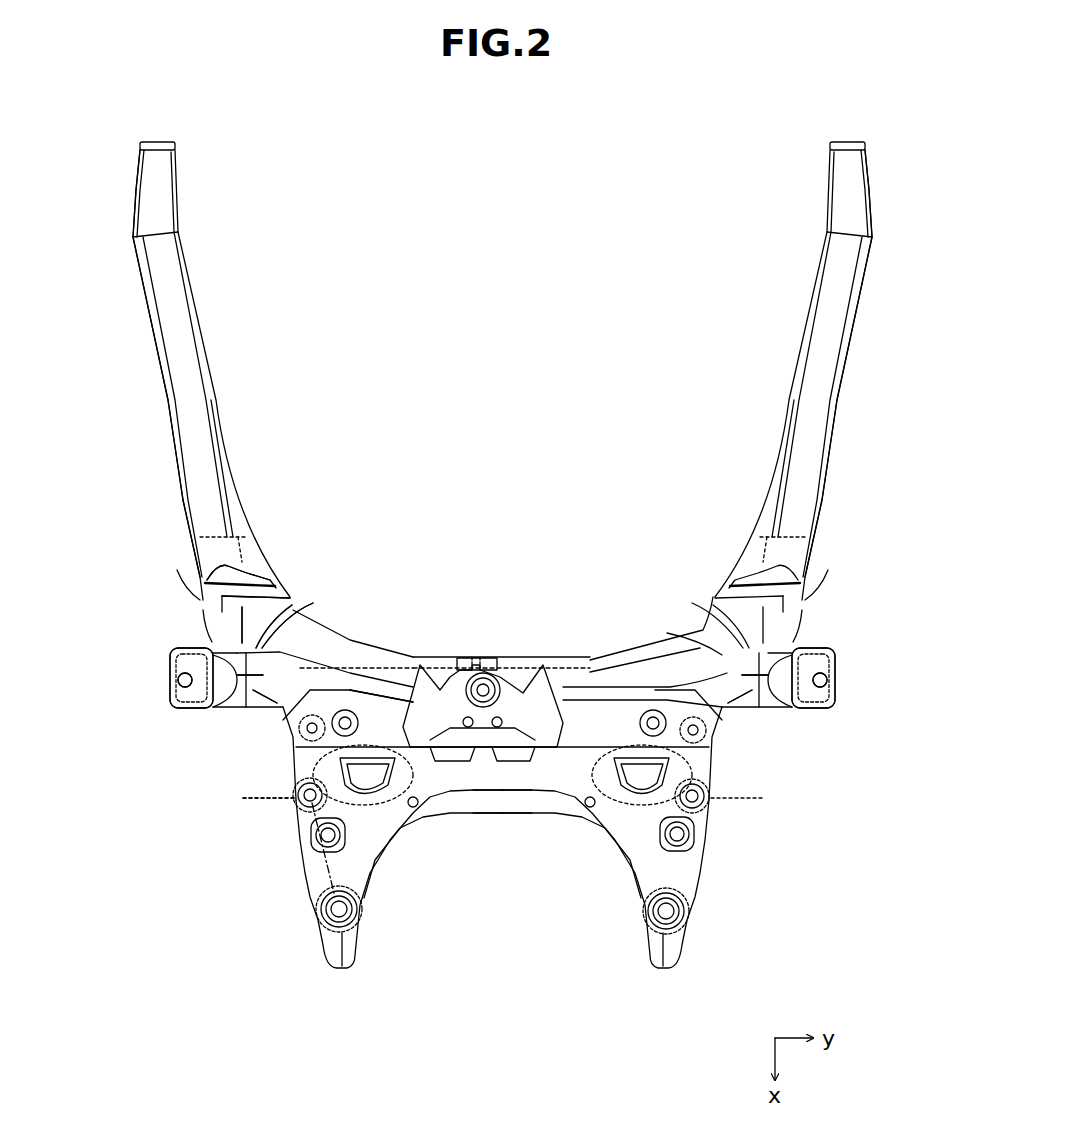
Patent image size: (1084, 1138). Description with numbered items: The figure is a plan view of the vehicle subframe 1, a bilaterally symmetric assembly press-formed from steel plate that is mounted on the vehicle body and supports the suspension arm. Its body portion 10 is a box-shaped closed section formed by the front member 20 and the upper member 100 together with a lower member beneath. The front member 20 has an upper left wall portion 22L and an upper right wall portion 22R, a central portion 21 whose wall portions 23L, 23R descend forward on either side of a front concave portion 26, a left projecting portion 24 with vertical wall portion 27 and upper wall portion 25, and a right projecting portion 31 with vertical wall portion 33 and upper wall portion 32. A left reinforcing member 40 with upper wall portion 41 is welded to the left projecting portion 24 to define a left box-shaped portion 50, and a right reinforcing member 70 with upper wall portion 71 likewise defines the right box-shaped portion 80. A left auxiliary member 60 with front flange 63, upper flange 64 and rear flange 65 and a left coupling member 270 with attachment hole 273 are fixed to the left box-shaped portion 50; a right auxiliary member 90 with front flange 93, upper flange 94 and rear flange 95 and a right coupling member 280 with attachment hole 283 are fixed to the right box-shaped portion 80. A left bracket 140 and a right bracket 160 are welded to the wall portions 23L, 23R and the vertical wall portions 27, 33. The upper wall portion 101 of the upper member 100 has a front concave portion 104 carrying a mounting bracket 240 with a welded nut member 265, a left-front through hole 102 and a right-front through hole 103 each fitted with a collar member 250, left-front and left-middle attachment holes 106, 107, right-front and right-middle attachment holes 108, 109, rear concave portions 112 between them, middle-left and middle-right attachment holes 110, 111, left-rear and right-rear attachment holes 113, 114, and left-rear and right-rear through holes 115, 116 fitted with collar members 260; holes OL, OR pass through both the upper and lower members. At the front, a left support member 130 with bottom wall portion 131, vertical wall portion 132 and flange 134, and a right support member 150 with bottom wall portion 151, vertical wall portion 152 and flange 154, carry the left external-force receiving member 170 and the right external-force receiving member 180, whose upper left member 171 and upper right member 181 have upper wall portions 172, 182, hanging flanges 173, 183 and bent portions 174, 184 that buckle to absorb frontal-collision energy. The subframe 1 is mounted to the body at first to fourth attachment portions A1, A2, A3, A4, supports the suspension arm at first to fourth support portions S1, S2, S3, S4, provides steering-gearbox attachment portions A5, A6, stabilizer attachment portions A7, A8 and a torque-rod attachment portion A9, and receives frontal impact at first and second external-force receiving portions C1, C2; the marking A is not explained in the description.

The subframe 1 is at (497, 915).
The body portion 10 is at (555, 640).
The front member 20 is at (476, 650).
The central portion 21 is at (490, 655).
The upper left wall portion 22L is at (405, 672).
The upper right wall portion 22R is at (620, 695).
The wall portion 23L is at (380, 655).
The wall portion 23R is at (580, 655).
The left projecting portion 24 is at (300, 616).
The upper wall portion 25 is at (256, 619).
The front concave portion 26 is at (478, 660).
The vertical wall portion 27 is at (285, 611).
The right projecting portion 31 is at (720, 660).
The upper wall portion 32 is at (760, 650).
The vertical wall portion 33 is at (715, 630).
The left reinforcing member 40 is at (265, 712).
The upper wall portion 41 is at (240, 700).
The left box-shaped portion 50 is at (230, 755).
The left auxiliary member 60 is at (230, 735).
The front flange 63 is at (218, 650).
The upper flange 64 is at (263, 683).
The rear flange 65 is at (215, 705).
The right reinforcing member 70 is at (740, 712).
The upper wall portion 71 is at (765, 700).
The right box-shaped portion 80 is at (775, 755).
The right auxiliary member 90 is at (780, 722).
The front flange 93 is at (788, 652).
The upper flange 94 is at (740, 685).
The rear flange 95 is at (790, 705).
The upper member 100 is at (552, 860).
The upper wall portion 101 is at (518, 797).
The left-front through hole 102 is at (355, 690).
The right-front through hole 103 is at (648, 715).
The front concave portion 104 is at (440, 655).
The left-front attachment hole 106 is at (340, 690).
The left-middle attachment hole 107 is at (254, 796).
The right-front attachment hole 108 is at (740, 752).
The right-middle attachment hole 109 is at (690, 840).
The middle-left attachment hole 110 is at (414, 808).
The middle-right attachment hole 111 is at (590, 808).
The rear concave portion 112 is at (298, 768).
The left-rear attachment hole 113 is at (320, 838).
The right-rear attachment hole 114 is at (684, 838).
The left-rear through hole 115 is at (340, 912).
The right-rear through hole 116 is at (670, 912).
The left support member 130 is at (200, 618).
The bottom wall portion 131 is at (203, 597).
The vertical wall portion 132 is at (205, 605).
The flange 134 is at (212, 572).
The left bracket 140 is at (340, 625).
The right support member 150 is at (805, 618).
The bottom wall portion 151 is at (803, 597).
The vertical wall portion 152 is at (800, 605).
The flange 154 is at (793, 572).
The right bracket 160 is at (660, 625).
The left external-force receiving member 170 is at (232, 312).
The upper left member 171 is at (222, 345).
The upper wall portion 172 is at (208, 380).
The flanges 173 is at (195, 270).
The bent portion 174 is at (215, 520).
The right external-force receiving member 180 is at (768, 312).
The upper right member 181 is at (785, 348).
The upper wall portion 182 is at (798, 380).
The flanges 183 is at (810, 270).
The bent portion 184 is at (790, 520).
The mounting bracket 240 is at (475, 775).
The collar member 250 is at (645, 727).
The collar member 260 is at (360, 913).
The nut member 265 is at (475, 698).
The left coupling member 270 is at (178, 715).
The attachment hole 273 is at (178, 680).
The right coupling member 280 is at (830, 714).
The attachment hole 283 is at (827, 680).
The axis A is at (300, 800).
The first attachment portion A1 is at (170, 658).
The second attachment portion A2 is at (835, 660).
The third attachment portion A3 is at (365, 908).
The fourth attachment portion A4 is at (643, 912).
The steering-gearbox left attachment portion A5 is at (340, 720).
The steering-gearbox right attachment portion A6 is at (660, 722).
The stabilizer left attachment portion A7 is at (363, 775).
The stabilizer right attachment portion A8 is at (642, 775).
The torque-rod attachment portion A9 is at (520, 648).
The first external-force receiving portion C1 is at (165, 135).
The second external-force receiving portion C2 is at (825, 135).
The hole OL is at (365, 829).
The hole OR is at (634, 830).
The first support portion S1 is at (195, 622).
The second support portion S2 is at (810, 622).
The third support portion S3 is at (300, 830).
The fourth support portion S4 is at (700, 840).